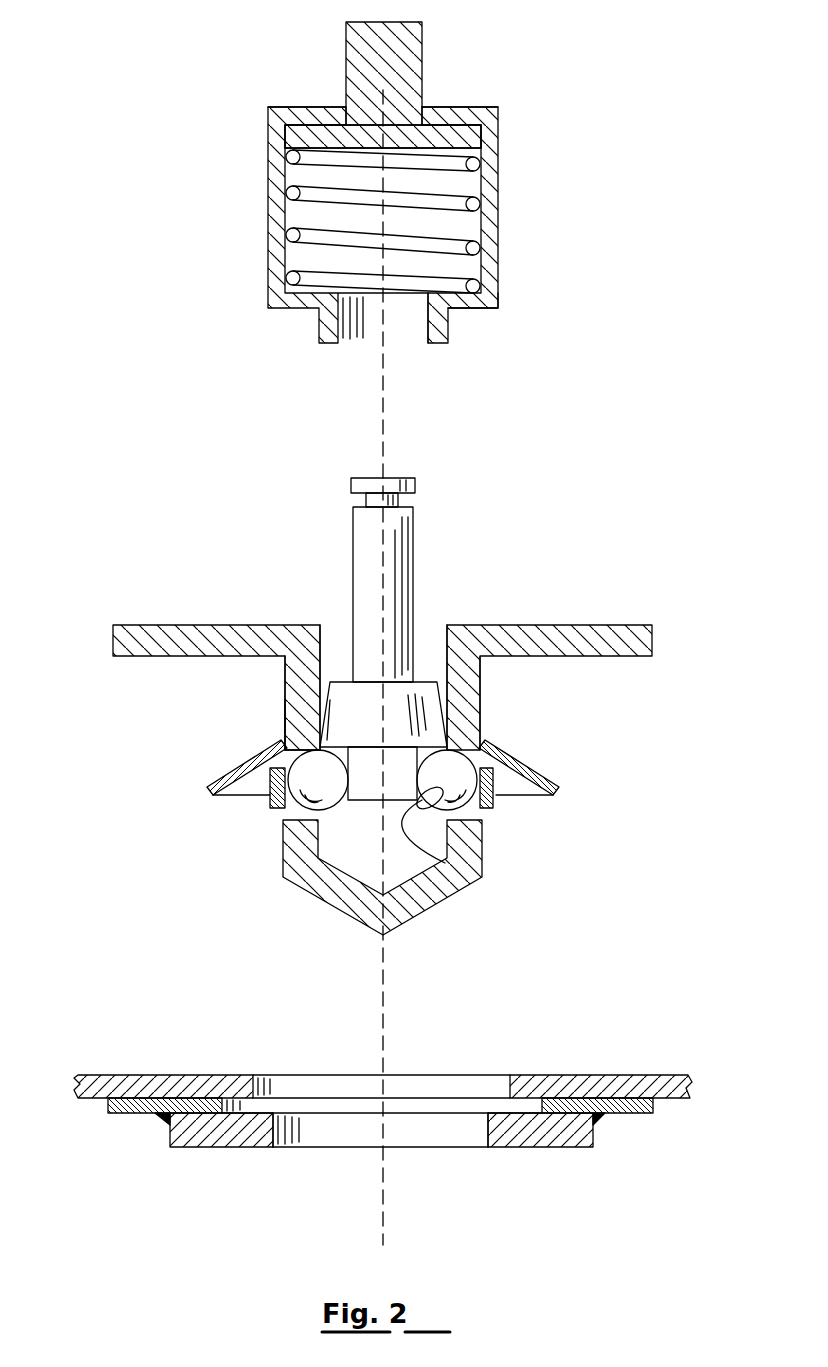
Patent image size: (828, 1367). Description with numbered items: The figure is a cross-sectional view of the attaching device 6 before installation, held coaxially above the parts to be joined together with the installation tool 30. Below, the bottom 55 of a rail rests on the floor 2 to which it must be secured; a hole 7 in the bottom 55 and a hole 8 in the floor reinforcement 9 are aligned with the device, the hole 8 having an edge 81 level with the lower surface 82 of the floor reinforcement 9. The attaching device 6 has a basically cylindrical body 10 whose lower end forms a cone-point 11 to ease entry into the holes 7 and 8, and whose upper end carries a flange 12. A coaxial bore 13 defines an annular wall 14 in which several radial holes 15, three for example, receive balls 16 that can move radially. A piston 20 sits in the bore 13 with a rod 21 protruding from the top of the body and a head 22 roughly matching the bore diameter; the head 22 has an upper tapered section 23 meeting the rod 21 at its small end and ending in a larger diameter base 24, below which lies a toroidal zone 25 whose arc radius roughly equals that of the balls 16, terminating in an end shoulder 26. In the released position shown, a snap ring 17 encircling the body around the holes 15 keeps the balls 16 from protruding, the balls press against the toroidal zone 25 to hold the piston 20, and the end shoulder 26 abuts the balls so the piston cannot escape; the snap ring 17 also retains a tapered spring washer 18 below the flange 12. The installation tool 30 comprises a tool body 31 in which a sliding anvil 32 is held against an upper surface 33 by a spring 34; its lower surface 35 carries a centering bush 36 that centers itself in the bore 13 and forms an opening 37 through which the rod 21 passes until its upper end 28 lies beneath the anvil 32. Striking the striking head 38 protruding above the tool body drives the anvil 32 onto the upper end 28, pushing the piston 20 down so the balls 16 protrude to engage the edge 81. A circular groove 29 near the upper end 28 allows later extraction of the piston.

The floor 2 is at (648, 1117).
The attaching device 6 is at (174, 775).
The hole 7 is at (468, 1080).
The hole 8 is at (318, 1148).
The floor reinforcement 9 is at (545, 1148).
The body 10 is at (480, 690).
The cone-point 11 is at (360, 915).
The flange 12 is at (545, 625).
The bore 13 is at (432, 624).
The annular wall 14 is at (288, 715).
The holes 15 is at (285, 810).
The balls 16 is at (282, 808).
The snap ring 17 is at (492, 805).
The tapered spring washer 18 is at (228, 770).
The piston 20 is at (355, 578).
The rod 21 is at (385, 530).
The piston head 22 is at (330, 690).
The upper tapered section 23 is at (443, 731).
The larger diameter base 24 is at (505, 755).
The toroidal zone 25 is at (482, 845).
The end shoulder 26 is at (474, 878).
The upper end 28 is at (362, 480).
The circular groove 29 is at (366, 500).
The installation tool 30 is at (236, 151).
The tool body 31 is at (270, 200).
The sliding anvil 32 is at (450, 128).
The upper surface 33 is at (300, 107).
The spring 34 is at (452, 203).
The lower surface 35 is at (482, 310).
The centering bush 36 is at (438, 345).
The opening 37 is at (352, 345).
The striking head 38 is at (423, 26).
The bottom 55 is at (614, 1077).
The edge 81 is at (484, 1146).
The lower surface 82 is at (213, 1148).